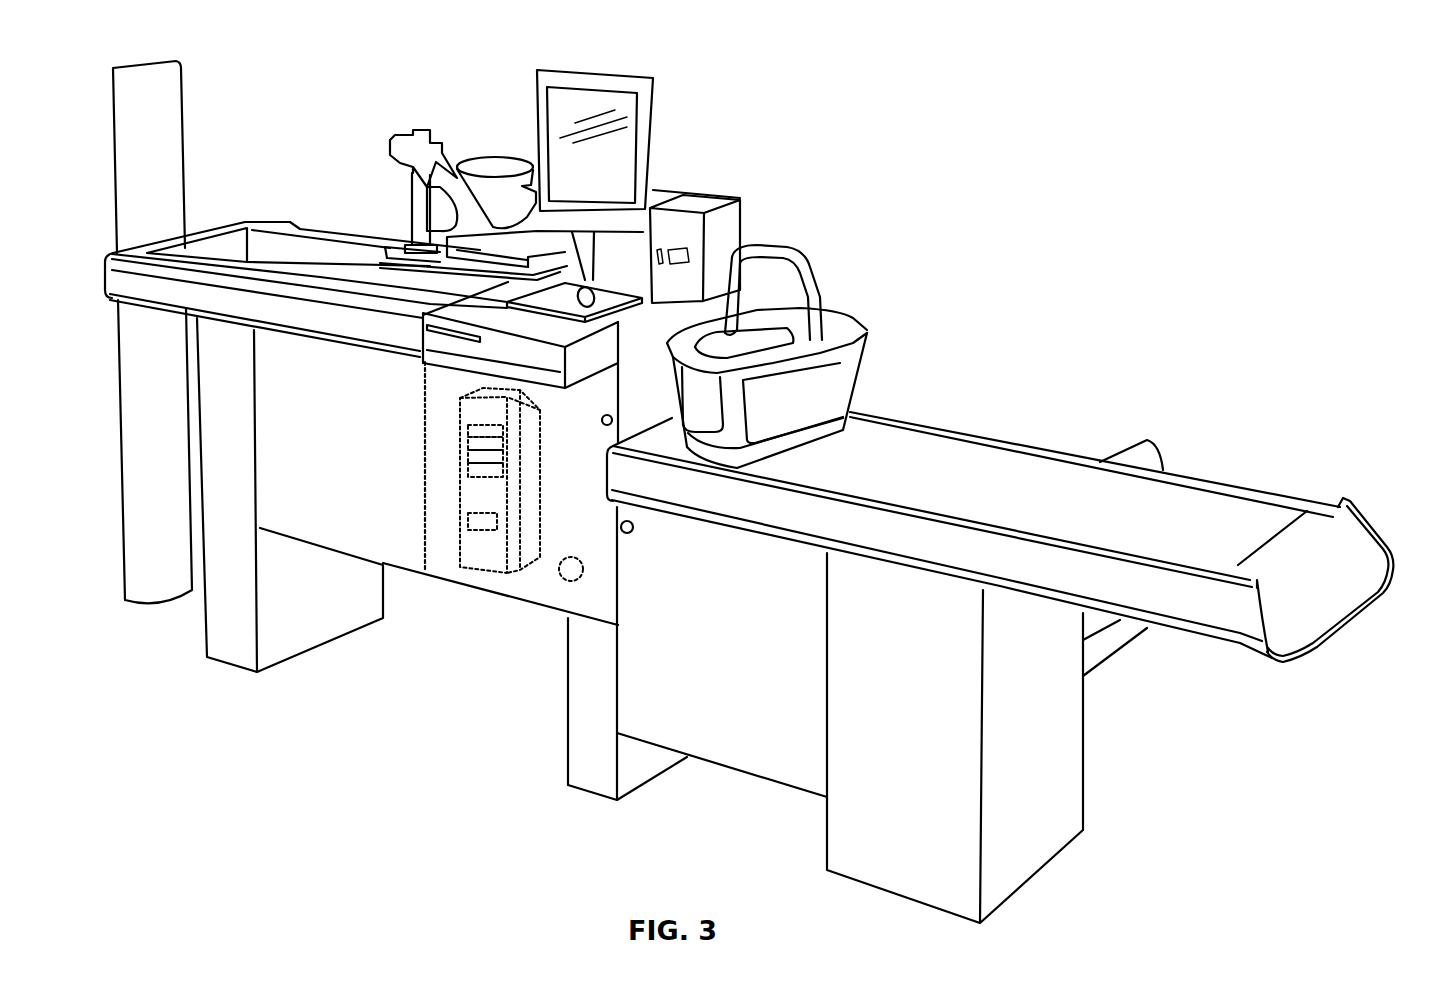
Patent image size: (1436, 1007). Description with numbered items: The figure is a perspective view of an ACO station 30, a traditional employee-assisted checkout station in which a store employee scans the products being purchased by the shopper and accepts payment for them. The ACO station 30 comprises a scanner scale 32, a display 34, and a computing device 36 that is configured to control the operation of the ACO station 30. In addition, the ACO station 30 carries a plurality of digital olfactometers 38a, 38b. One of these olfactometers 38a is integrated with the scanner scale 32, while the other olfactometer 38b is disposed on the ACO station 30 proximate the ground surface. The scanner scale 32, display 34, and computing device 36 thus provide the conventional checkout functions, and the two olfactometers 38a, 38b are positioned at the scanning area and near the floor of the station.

The ACO station 30 is at (1160, 125).
The scanner scale 32 is at (540, 293).
The display 34 is at (615, 182).
The computing device 36 is at (450, 563).
The digital olfactometer 38a is at (594, 284).
The digital olfactometer 38b is at (562, 583).